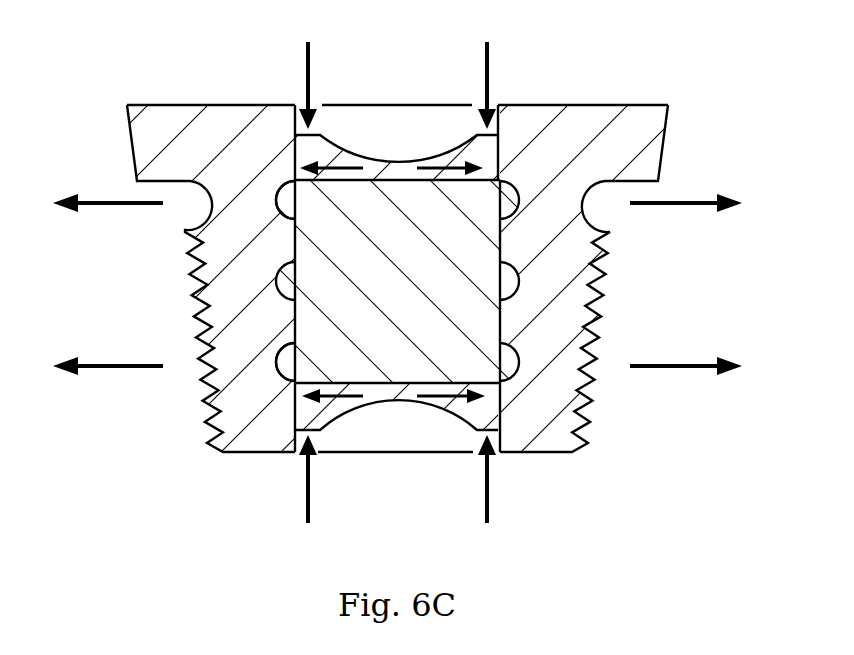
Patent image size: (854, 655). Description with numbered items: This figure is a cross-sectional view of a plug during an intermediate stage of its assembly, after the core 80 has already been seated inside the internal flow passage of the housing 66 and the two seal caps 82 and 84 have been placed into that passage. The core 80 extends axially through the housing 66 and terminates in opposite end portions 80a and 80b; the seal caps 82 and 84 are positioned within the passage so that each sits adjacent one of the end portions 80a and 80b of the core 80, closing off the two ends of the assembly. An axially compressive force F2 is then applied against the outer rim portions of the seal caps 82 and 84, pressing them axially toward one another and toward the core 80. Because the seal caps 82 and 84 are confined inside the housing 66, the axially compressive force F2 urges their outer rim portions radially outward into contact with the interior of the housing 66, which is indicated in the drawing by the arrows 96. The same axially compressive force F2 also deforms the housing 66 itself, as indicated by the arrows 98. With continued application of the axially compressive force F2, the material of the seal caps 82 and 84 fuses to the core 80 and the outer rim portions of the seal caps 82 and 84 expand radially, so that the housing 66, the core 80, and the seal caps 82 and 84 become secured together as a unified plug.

The housing 66 is at (589, 105).
The core 80 is at (411, 295).
The end portion 80a is at (283, 192).
The end portion 80b is at (287, 372).
The seal cap 82 is at (391, 170).
The seal cap 84 is at (393, 402).
The arrows 96 is at (341, 163).
The arrows 98 is at (118, 203).
The axially compressive force F2 is at (397, 281).